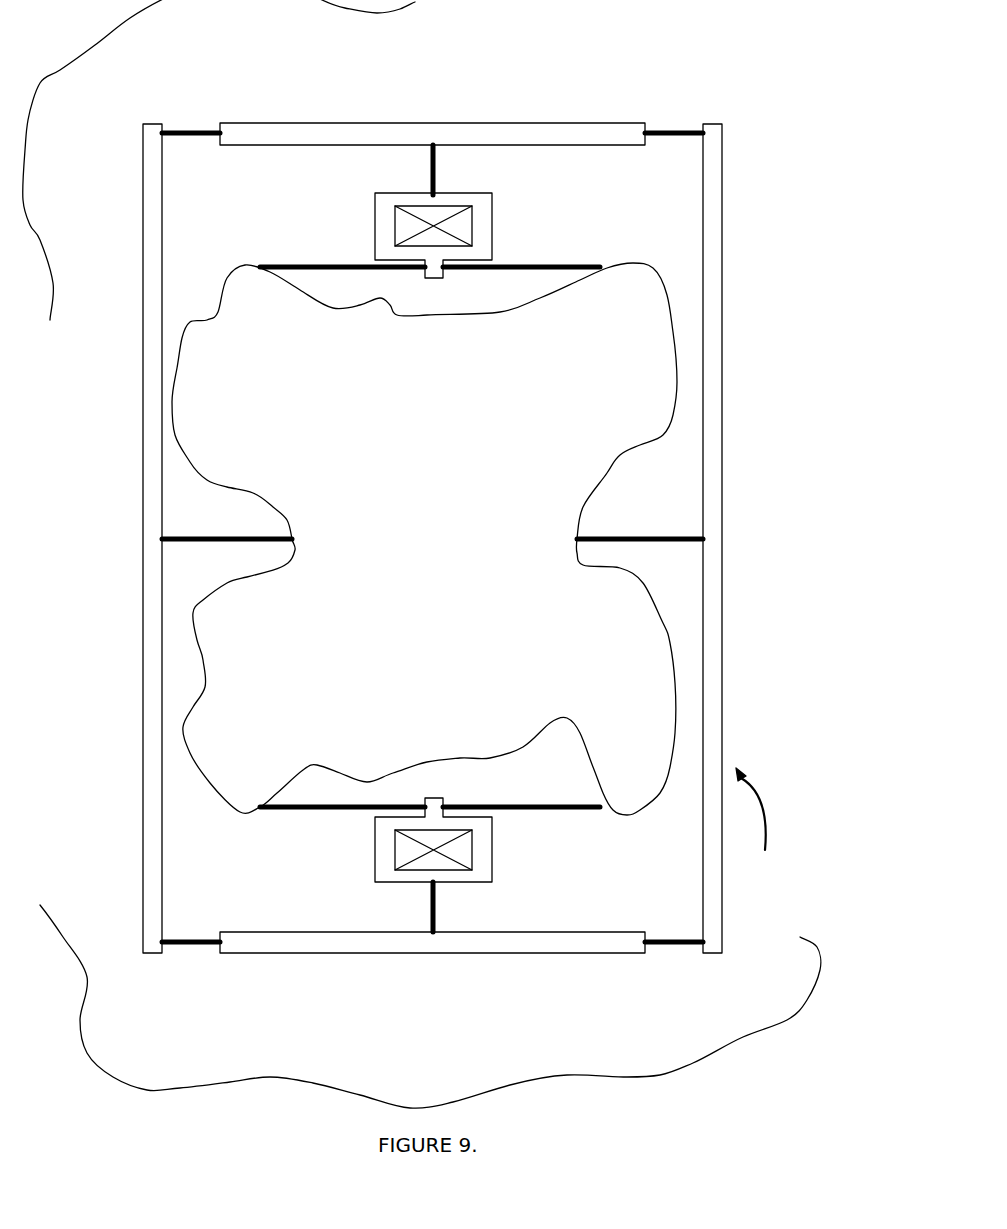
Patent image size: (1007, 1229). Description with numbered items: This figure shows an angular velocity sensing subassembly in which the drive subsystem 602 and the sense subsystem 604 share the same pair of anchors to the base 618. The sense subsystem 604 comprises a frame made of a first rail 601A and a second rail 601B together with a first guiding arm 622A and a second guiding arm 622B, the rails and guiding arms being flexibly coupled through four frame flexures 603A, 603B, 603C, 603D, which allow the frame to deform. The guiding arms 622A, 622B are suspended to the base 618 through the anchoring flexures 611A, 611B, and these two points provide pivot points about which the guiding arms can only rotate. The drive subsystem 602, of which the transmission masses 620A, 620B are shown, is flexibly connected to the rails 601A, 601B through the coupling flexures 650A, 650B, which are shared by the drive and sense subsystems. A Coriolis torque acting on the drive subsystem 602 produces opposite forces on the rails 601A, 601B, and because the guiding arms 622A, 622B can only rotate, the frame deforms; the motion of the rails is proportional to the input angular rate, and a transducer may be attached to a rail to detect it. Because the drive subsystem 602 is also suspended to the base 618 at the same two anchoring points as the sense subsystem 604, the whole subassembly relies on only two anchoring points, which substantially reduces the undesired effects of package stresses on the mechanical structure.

The base 618 is at (422, 554).
The first rail 601A is at (150, 250).
The second rail 601B is at (713, 278).
The frame flexure 603A is at (185, 130).
The frame flexure 603B is at (670, 130).
The frame flexure 603C is at (190, 943).
The frame flexure 603D is at (662, 943).
The first guiding arm 622A is at (508, 135).
The second guiding arm 622B is at (393, 943).
The anchoring flexure 611A is at (430, 163).
The anchoring flexure 611B is at (430, 915).
The transmission mass 620A is at (483, 220).
The transmission mass 620B is at (477, 847).
The coupling flexure 650A is at (213, 538).
The coupling flexure 650B is at (652, 537).
The drive subsystem 602 is at (542, 647).
The sense subsystem 604 is at (759, 819).